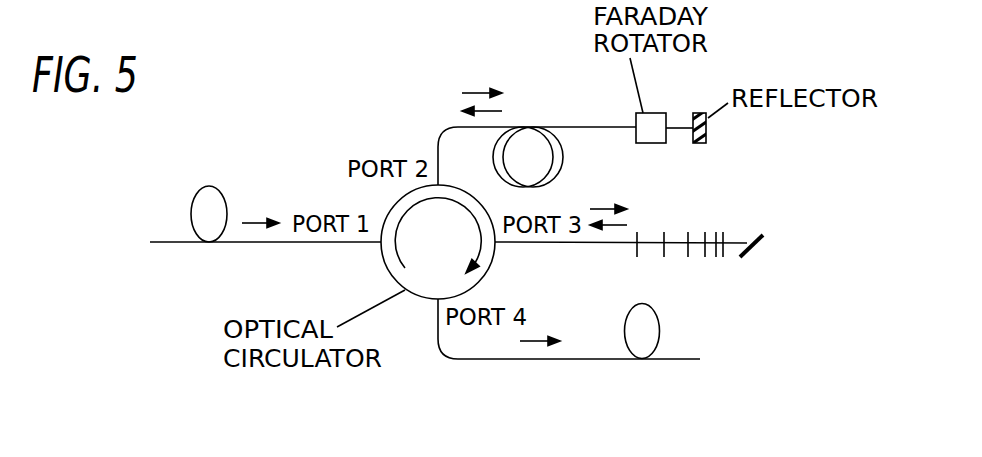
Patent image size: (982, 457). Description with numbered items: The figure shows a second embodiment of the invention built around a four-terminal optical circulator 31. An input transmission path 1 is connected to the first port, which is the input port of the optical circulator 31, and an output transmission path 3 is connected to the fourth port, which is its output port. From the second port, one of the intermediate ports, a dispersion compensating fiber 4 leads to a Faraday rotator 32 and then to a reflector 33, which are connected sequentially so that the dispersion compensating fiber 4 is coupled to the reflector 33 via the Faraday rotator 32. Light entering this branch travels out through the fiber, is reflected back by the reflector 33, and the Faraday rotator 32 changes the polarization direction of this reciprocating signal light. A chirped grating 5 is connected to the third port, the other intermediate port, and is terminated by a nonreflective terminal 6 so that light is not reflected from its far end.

The input transmission path 1 is at (192, 243).
The optical circulator 31 is at (387, 273).
The dispersion compensating fiber 4 is at (528, 128).
The Faraday rotator 32 is at (653, 112).
The reflector 33 is at (698, 113).
The chirped grating 5 is at (682, 232).
The nonreflective terminal 6 is at (748, 252).
The output transmission path 3 is at (670, 361).